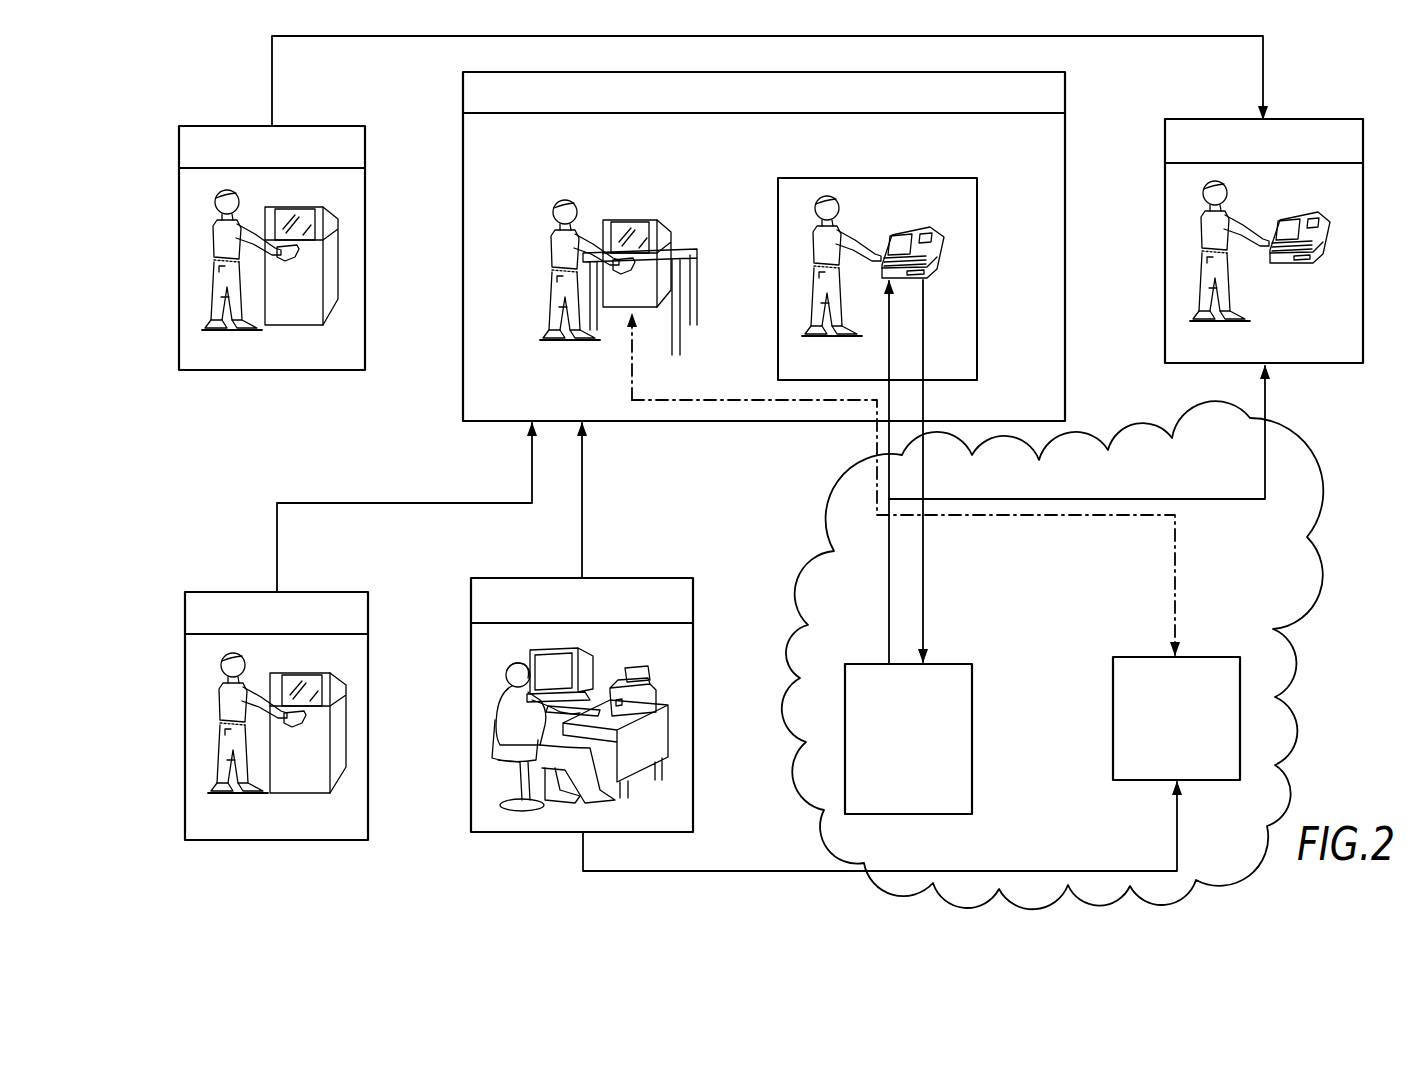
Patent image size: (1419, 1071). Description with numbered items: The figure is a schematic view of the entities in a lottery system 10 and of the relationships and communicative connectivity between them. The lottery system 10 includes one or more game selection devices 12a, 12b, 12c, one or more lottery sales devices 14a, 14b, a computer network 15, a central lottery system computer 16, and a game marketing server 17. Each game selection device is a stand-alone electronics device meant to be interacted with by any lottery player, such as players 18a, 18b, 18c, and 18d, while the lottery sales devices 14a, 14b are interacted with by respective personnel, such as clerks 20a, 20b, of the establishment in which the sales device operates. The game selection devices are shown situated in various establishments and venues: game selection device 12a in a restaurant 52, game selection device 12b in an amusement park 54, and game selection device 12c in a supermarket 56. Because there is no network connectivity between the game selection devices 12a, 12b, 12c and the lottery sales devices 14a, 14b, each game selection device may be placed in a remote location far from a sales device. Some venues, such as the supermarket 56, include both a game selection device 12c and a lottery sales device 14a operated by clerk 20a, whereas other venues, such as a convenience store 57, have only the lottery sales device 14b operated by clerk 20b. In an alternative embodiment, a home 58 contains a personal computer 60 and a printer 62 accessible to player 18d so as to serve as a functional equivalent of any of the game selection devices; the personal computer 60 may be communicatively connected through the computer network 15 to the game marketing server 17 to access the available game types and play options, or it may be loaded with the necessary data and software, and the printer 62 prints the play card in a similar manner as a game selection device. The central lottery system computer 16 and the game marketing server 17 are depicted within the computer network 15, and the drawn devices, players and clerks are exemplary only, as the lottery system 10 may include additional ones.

The lottery system 10 is at (1076, 655).
The game selection device 12a is at (301, 295).
The game selection device 12b is at (306, 760).
The game selection device 12c is at (648, 247).
The lottery sales device 14a is at (948, 232).
The lottery sales device 14b is at (1296, 269).
The computer network 15 is at (1300, 535).
The central lottery system computer 16 is at (845, 690).
The game marketing server 17 is at (1113, 668).
The player 18a is at (218, 240).
The player 18b is at (222, 708).
The player 18c is at (548, 232).
The player 18d is at (500, 700).
The clerk 20a is at (815, 248).
The clerk 20b is at (1200, 222).
The restaurant 52 is at (179, 310).
The amusement park 54 is at (185, 775).
The supermarket 56 is at (463, 128).
The convenience store 57 is at (1363, 222).
The home 58 is at (470, 712).
The personal computer 60 is at (601, 668).
The printer 62 is at (662, 685).